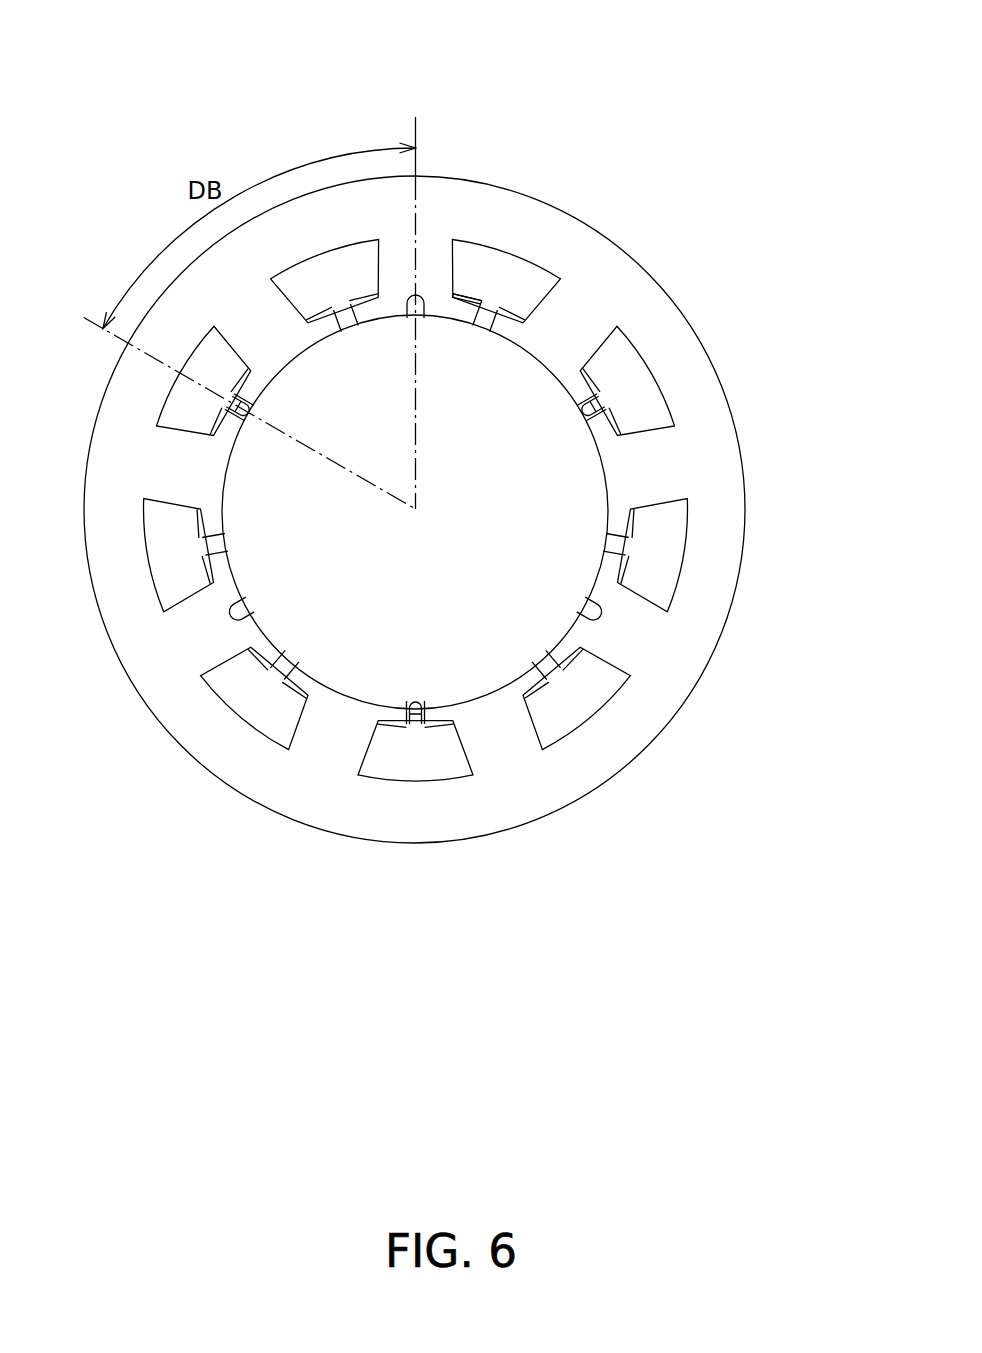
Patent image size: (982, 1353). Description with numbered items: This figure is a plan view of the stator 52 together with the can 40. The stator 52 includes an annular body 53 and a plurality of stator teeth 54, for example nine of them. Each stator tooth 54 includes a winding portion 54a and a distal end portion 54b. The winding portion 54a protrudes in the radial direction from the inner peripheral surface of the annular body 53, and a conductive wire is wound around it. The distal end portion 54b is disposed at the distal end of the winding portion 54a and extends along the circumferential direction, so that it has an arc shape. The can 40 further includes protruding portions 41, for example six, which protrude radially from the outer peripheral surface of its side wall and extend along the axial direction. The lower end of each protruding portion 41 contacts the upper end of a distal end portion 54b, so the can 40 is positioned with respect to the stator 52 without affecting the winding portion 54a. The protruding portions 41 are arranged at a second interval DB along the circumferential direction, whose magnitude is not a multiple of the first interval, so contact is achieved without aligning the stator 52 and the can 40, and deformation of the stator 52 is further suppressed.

The stator 52 is at (409, 101).
The annular body 53 is at (410, 805).
The stator teeth 54 is at (193, 637).
The winding portion 54a is at (430, 262).
The distal end portion 54b is at (463, 310).
The can 40 is at (552, 672).
The protruding portion 41 is at (603, 397).